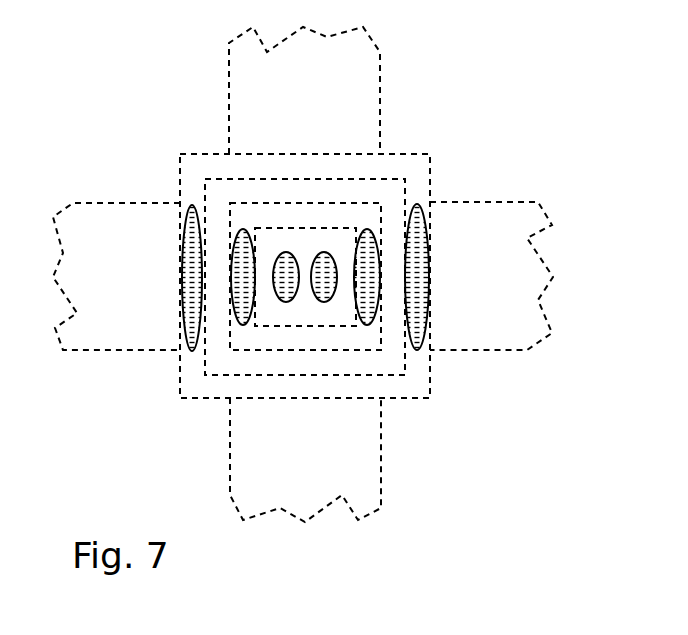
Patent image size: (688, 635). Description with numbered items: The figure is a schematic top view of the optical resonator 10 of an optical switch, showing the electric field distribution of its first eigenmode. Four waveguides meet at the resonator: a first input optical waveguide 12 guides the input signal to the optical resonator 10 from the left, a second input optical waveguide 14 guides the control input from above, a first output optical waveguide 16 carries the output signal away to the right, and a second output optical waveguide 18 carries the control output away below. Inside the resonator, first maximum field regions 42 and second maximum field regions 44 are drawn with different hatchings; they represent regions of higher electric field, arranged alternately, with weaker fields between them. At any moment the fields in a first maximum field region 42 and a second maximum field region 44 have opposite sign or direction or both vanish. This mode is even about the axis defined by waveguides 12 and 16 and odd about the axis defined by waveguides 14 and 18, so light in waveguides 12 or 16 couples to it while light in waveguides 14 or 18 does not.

The optical resonator 10 is at (429, 149).
The first input optical waveguide 12 is at (115, 237).
The second input optical waveguide 14 is at (240, 89).
The first output optical waveguide 16 is at (488, 235).
The second output optical waveguide 18 is at (242, 471).
The first maximum field region 42 is at (288, 273).
The second maximum field region 44 is at (410, 325).